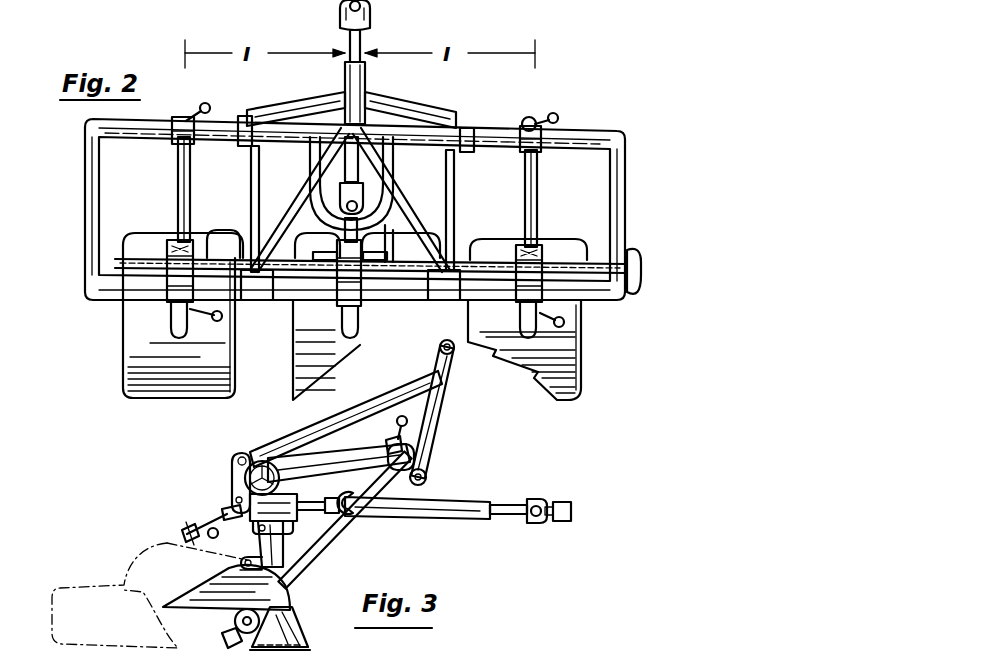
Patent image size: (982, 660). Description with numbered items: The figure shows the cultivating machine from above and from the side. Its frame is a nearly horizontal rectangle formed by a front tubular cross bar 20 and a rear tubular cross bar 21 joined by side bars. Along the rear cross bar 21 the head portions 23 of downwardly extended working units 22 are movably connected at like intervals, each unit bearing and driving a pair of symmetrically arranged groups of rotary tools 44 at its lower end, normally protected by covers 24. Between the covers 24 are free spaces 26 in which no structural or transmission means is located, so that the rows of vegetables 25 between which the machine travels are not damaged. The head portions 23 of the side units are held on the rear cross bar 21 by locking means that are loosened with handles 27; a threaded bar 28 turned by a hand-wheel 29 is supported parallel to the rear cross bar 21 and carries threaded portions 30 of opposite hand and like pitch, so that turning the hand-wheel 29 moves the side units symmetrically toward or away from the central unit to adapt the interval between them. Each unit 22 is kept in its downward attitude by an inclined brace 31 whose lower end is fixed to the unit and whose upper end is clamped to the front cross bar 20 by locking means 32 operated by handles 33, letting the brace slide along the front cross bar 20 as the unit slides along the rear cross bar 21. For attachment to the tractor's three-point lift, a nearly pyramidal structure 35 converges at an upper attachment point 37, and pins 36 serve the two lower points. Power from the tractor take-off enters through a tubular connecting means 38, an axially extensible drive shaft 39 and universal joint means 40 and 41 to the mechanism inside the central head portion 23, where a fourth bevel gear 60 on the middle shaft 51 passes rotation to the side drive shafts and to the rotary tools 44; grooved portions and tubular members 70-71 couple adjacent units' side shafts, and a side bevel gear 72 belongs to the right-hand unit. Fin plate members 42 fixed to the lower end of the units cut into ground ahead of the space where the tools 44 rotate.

In FIG. 2, the front tubular cross bar 20 is at (577, 129).
In FIG. 3, the front tubular cross bar 20 is at (418, 514).
In FIG. 2, the rear tubular cross bar 21 is at (313, 283).
In FIG. 3, the rear tubular cross bar 21 is at (236, 495).
In FIG. 3, the working unit 22 is at (330, 545).
In FIG. 2, the head portion 23 is at (355, 290).
In FIG. 3, the head portion 23 is at (300, 513).
In FIG. 2, the cover 24 is at (170, 2).
In FIG. 3, the cover 24 is at (222, 586).
In FIG. 2, the rows of vegetables 25 is at (128, 6).
In FIG. 2, the free space 26 is at (248, 380).
In FIG. 2, the handle 27 is at (223, 317).
In FIG. 3, the handle 27 is at (210, 526).
In FIG. 2, the threaded bar 28 is at (455, 240).
In FIG. 2, the hand-wheel 29 is at (634, 250).
In FIG. 3, the hand-wheel 29 is at (266, 460).
In FIG. 2, the threaded portion 30 is at (238, 236).
In FIG. 2, the inclined brace 31 is at (191, 172).
In FIG. 3, the inclined brace 31 is at (290, 572).
In FIG. 2, the locking means 32 is at (181, 118).
In FIG. 3, the locking means 32 is at (425, 456).
In FIG. 2, the handle 33 is at (209, 106).
In FIG. 3, the handle 33 is at (394, 442).
In FIG. 2, the pyramidal structure 35 is at (293, 200).
In FIG. 3, the pyramidal structure 35 is at (345, 412).
In FIG. 2, the pin 36 is at (248, 115).
In FIG. 3, the pin 36 is at (428, 479).
In FIG. 2, the convergence point of pyramidal structure 37 is at (378, 103).
In FIG. 3, the convergence point of pyramidal structure 37 is at (451, 356).
In FIG. 2, the tubular connecting means 38 is at (372, 4).
In FIG. 3, the tubular connecting means 38 is at (565, 523).
In FIG. 2, the axially extensible drive shaft 39 is at (346, 80).
In FIG. 3, the axially extensible drive shaft 39 is at (470, 518).
In FIG. 2, the universal joint means 40 is at (370, 22).
In FIG. 3, the universal joint means 40 is at (539, 524).
In FIG. 2, the universal joint means 41 is at (366, 205).
In FIG. 3, the universal joint means 41 is at (352, 508).
In FIG. 3, the fin plate member 42 is at (303, 641).
In FIG. 3, the rotary tools 44 is at (234, 623).
In FIG. 2, the middle shaft 51 is at (330, 250).
In FIG. 2, the fourth bevel gear 60 is at (345, 295).
In FIG. 2, the grooved extended portion and grooved tubular member 70-71 is at (213, 256).
In FIG. 2, the side bevel gear 72 is at (182, 236).